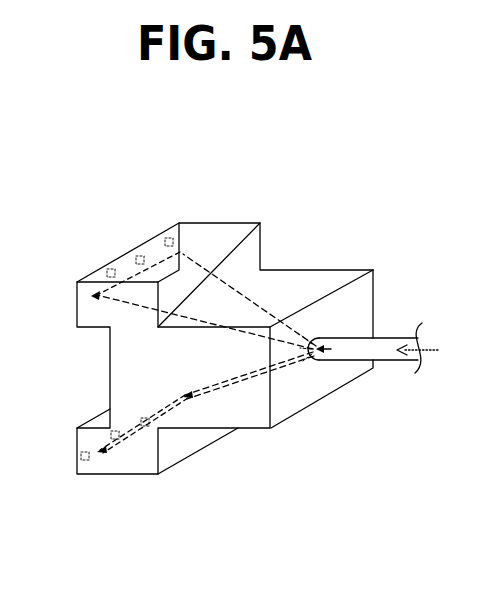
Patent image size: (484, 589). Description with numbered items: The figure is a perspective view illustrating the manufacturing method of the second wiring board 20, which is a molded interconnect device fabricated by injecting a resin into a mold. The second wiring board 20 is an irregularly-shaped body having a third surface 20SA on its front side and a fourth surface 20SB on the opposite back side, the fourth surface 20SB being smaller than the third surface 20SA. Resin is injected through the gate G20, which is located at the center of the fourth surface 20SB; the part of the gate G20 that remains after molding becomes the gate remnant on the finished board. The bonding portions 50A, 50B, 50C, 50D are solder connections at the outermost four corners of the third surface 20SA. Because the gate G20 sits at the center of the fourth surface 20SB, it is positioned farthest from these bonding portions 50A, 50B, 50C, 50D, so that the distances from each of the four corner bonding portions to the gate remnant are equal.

The second wiring board 20 is at (239, 223).
The bonding portion 50A is at (91, 296).
The bonding portion 50B is at (172, 246).
The bonding portion 50C is at (91, 471).
The bonding portion 50D is at (181, 394).
The gate G20 is at (392, 337).
The third surface 20SA is at (70, 451).
The fourth surface 20SB is at (304, 403).